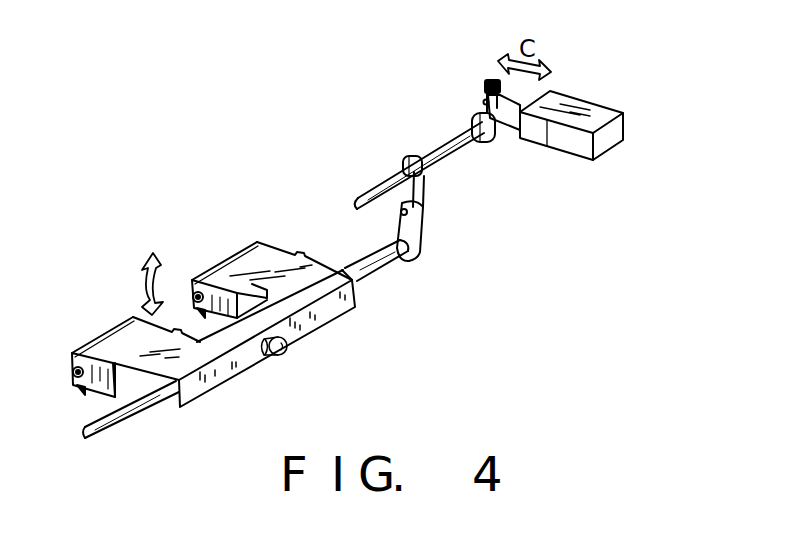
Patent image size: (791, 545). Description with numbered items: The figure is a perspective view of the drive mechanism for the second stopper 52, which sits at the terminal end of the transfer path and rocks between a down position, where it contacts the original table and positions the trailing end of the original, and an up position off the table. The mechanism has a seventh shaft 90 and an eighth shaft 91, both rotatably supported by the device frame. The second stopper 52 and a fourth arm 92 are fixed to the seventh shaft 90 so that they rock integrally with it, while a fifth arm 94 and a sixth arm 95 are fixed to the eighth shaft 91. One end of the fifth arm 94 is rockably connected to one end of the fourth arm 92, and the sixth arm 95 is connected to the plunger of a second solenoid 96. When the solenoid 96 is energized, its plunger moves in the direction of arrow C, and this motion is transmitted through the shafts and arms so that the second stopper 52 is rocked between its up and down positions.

The second stopper 52 is at (97, 333).
The seventh shaft 90 is at (377, 272).
The eighth shaft 91 is at (430, 154).
The fourth arm 92 is at (423, 230).
The fifth arm 94 is at (423, 182).
The sixth arm 95 is at (502, 132).
The second solenoid 96 is at (587, 108).